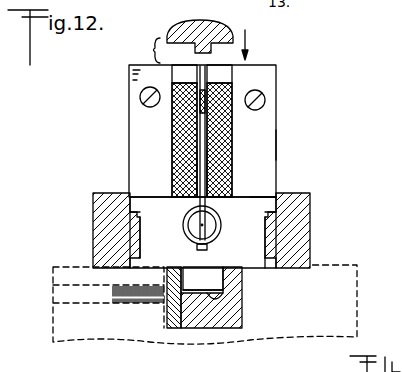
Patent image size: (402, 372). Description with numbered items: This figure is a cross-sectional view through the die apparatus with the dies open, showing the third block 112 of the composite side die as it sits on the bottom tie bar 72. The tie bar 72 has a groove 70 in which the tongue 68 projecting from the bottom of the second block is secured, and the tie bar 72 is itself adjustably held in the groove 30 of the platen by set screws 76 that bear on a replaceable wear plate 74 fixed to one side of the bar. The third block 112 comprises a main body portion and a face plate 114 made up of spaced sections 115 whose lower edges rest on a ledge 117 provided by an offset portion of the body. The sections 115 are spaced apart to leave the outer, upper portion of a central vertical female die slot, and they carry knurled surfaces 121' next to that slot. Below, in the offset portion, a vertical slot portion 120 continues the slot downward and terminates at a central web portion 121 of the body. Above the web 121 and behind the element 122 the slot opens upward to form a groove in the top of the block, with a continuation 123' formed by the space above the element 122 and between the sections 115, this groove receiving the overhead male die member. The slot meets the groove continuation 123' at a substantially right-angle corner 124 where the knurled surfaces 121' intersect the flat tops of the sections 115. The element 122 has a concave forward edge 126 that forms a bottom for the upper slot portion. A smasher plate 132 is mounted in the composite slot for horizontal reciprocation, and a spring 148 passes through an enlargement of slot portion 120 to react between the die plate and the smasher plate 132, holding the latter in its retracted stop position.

The groove 30 is at (240, 328).
The tongue 68 is at (208, 283).
The groove 70 is at (215, 303).
The bottom tie bar 72 is at (235, 312).
The wear plate 74 is at (166, 312).
The set screw 76 is at (120, 300).
The third block 112 is at (263, 262).
The face plate 114 is at (276, 102).
The section 115 is at (266, 145).
The ledge 117 is at (263, 195).
The vertical slot portion 120 is at (207, 196).
The central web portion 121 is at (168, 140).
The knurled surface 121' is at (239, 131).
The element 122 is at (172, 83).
The groove continuation 123' is at (220, 142).
The right-angle corner 124 is at (191, 43).
The concave forward edge 126 is at (205, 98).
The smasher plate 132 is at (201, 180).
The spring 148 is at (216, 232).